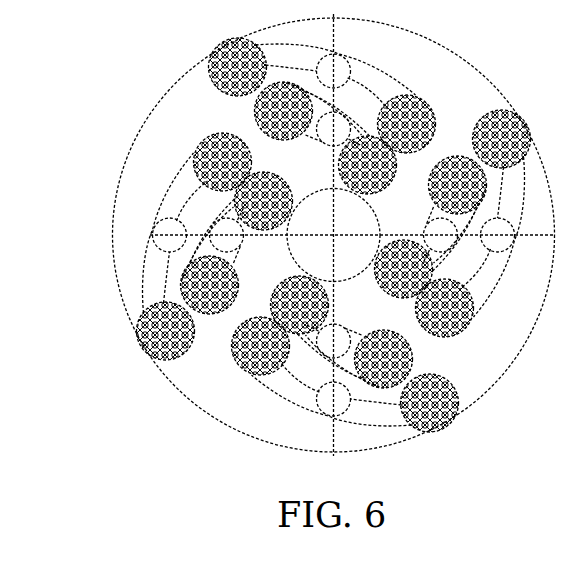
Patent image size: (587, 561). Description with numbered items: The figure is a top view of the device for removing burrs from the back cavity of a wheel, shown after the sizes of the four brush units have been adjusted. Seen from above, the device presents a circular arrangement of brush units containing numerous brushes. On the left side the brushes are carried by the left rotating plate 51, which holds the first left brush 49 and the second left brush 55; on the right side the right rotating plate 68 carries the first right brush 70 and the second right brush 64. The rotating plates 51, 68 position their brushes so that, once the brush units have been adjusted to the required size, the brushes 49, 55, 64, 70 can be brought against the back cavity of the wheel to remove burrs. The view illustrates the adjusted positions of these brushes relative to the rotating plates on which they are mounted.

The first left brush 49 is at (137, 333).
The left rotating plate 51 is at (183, 286).
The second left brush 55 is at (200, 157).
The second right brush 64 is at (150, 235).
The right rotating plate 68 is at (158, 228).
The first right brush 70 is at (236, 202).